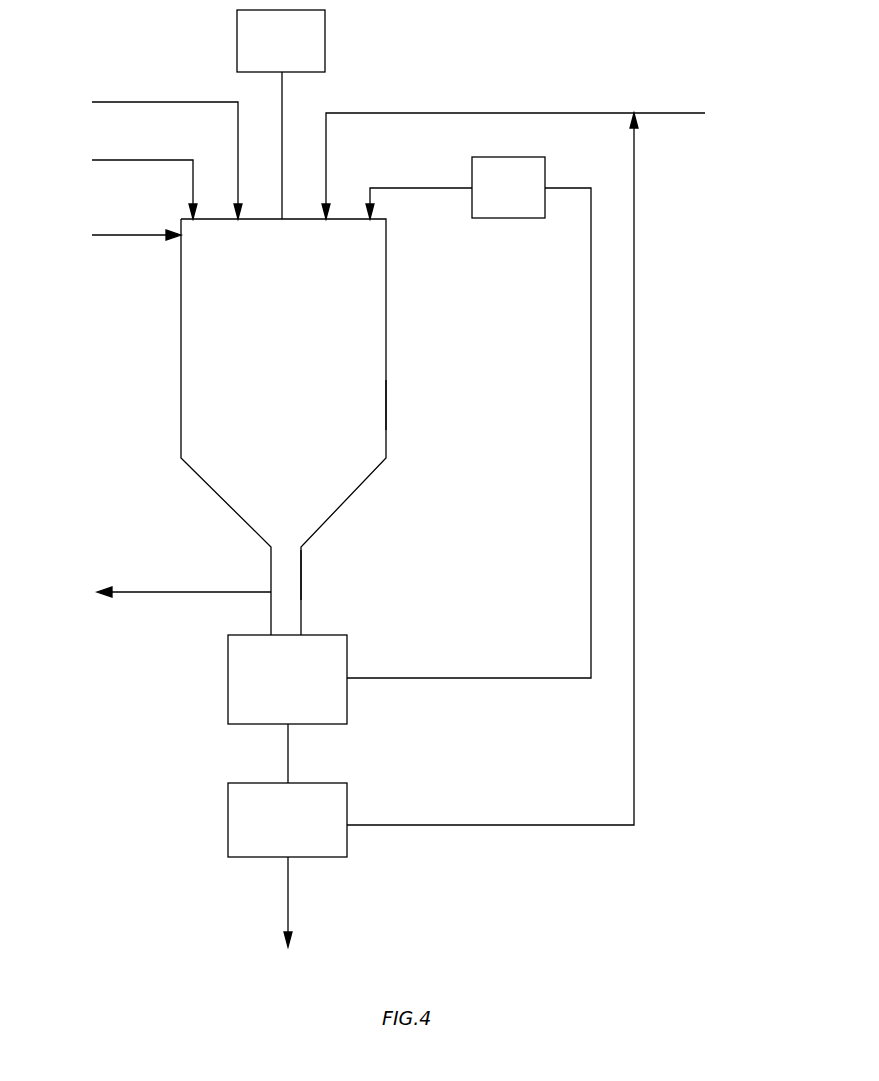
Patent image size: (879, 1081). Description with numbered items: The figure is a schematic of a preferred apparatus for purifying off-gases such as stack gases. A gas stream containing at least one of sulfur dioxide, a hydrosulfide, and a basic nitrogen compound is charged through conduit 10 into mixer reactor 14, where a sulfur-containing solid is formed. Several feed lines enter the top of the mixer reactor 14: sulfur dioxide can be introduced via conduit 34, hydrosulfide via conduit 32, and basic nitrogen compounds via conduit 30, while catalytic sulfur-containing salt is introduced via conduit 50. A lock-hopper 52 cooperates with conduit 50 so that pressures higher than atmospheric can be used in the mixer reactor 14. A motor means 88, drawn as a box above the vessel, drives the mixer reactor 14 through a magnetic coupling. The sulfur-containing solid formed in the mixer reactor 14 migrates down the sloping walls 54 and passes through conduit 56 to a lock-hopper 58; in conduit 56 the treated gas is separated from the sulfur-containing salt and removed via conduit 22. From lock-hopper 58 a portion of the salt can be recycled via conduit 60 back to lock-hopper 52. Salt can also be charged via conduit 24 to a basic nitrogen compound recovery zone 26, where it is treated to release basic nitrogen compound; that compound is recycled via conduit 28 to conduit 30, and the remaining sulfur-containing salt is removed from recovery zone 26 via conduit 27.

The motor means 88 is at (281, 114).
The mixer reactor 14 is at (172, 407).
The sloping walls 54 is at (387, 405).
The conduit 56 is at (302, 573).
The conduit 32 is at (145, 156).
The conduit 34 is at (122, 184).
The conduit 10 is at (114, 235).
The conduit 30 is at (534, 160).
The conduit 28 is at (648, 556).
The conduit 50 is at (410, 188).
The lock-hopper 52 is at (503, 218).
The conduit 60 is at (478, 678).
The lock-hopper 58 is at (228, 683).
The conduit 24 is at (303, 757).
The basic nitrogen compound recovery zone 26 is at (217, 822).
The conduit 27 is at (286, 916).
The conduit 22 is at (163, 590).